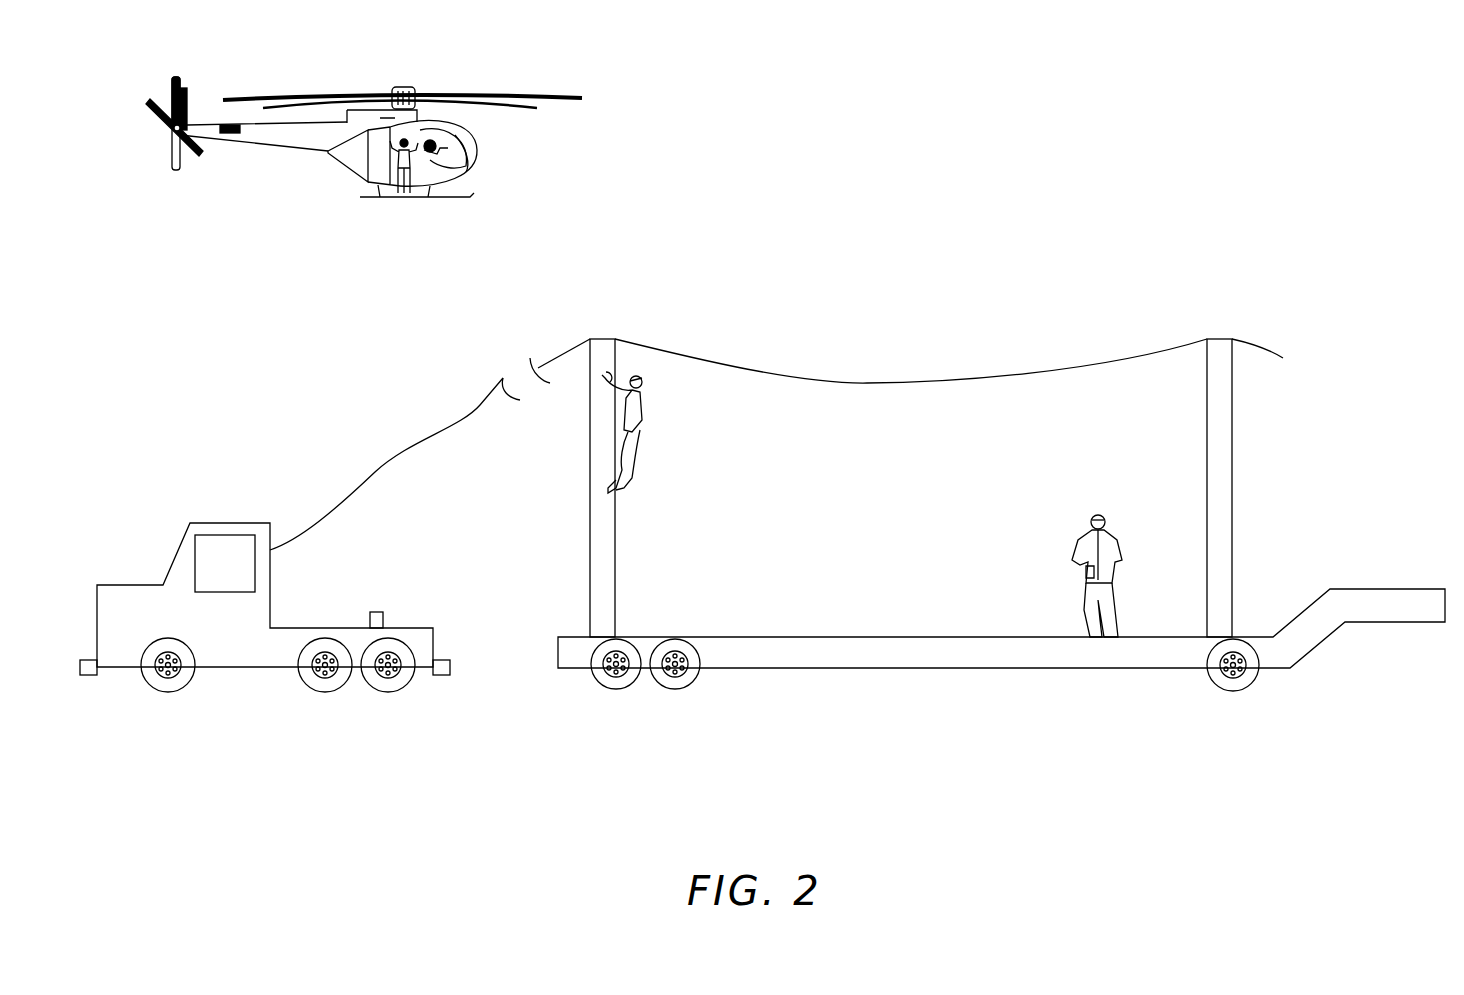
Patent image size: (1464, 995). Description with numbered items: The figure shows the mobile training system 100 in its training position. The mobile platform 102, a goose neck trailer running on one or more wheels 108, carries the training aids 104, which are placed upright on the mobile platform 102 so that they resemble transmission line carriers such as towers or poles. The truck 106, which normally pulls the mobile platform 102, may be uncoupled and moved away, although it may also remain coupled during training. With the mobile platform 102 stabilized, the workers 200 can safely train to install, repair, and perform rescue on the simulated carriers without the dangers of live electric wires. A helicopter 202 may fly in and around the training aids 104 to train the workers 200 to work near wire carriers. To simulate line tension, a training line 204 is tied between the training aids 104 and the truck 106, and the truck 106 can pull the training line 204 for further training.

The mobile training system 100 is at (1145, 134).
The mobile platform 102 is at (918, 660).
The training aids 104 is at (615, 572).
The truck 106 is at (333, 593).
The wheels 108 is at (623, 688).
The workers 200 is at (432, 147).
The helicopter 202 is at (208, 98).
The training line 204 is at (890, 382).